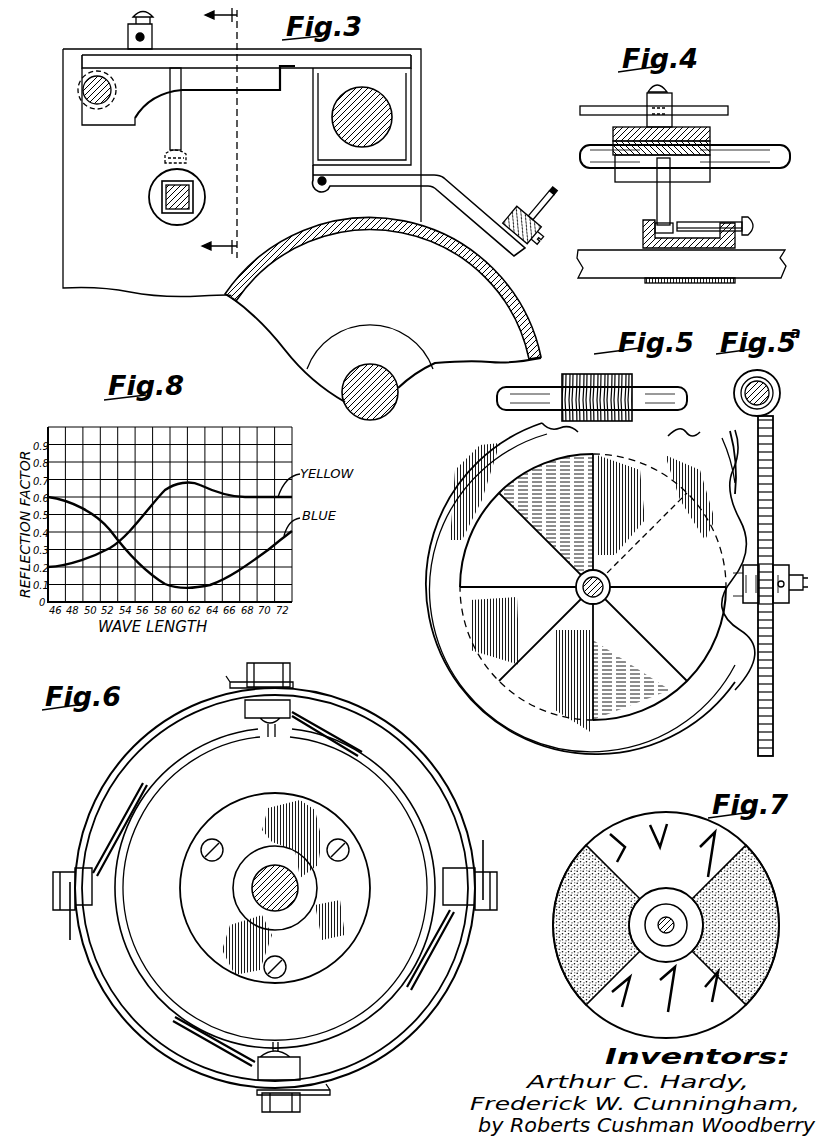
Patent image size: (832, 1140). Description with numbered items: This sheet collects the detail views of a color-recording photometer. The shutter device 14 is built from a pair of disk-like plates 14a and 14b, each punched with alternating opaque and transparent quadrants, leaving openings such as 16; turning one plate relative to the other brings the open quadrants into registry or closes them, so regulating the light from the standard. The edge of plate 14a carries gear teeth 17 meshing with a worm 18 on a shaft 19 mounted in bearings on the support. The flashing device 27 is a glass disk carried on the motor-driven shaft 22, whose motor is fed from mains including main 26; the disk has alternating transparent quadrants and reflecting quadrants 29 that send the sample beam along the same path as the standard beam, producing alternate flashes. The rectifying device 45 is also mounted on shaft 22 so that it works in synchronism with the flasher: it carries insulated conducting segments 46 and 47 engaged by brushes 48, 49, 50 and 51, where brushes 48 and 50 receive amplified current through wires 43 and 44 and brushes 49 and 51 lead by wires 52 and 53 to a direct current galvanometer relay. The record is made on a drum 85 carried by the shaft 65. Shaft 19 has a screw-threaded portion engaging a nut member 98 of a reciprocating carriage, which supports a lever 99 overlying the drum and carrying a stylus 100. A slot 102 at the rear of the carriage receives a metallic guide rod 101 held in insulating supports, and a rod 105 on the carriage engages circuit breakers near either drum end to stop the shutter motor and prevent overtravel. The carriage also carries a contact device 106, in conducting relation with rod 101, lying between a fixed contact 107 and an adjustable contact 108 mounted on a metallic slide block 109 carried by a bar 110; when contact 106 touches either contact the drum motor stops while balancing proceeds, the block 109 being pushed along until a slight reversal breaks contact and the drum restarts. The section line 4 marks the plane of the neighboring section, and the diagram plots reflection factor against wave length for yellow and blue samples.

In FIG. 3, the section line 4— 4 is at (226, 133).
In FIG. 5, the shutter device 14 is at (422, 537).
In FIG. 5, the plate 14a is at (510, 458).
In FIG. 5A, the plate 14a is at (758, 734).
In FIG. 5, the plate 14b is at (525, 495).
In FIG. 5A, the plate 14b is at (775, 480).
In FIG. 5, the opening 16 is at (700, 640).
In FIG. 5, the gear teeth 17 is at (650, 436).
In FIG. 5, the worm 18 is at (628, 386).
In FIG. 5A, the worm 18 is at (766, 378).
In FIG. 3, the shaft 19 is at (390, 110).
In FIG. 5, the shaft 19 is at (680, 390).
In FIG. 5A, the shaft 19 is at (770, 393).
In FIG. 6, the shaft 22 is at (262, 898).
In FIG. 7, the shaft 22 is at (665, 917).
In FIG. 7, the main 26 is at (605, 838).
In FIG. 7, the flashing device 27 is at (785, 870).
In FIG. 7, the reflecting quadrant 29 is at (575, 922).
In FIG. 6, the wire 43 is at (230, 682).
In FIG. 6, the wire 44 is at (320, 1095).
In FIG. 6, the rectifying device 45 is at (330, 680).
In FIG. 6, the conducting segment 46 is at (410, 772).
In FIG. 6, the conducting segment 47 is at (135, 965).
In FIG. 6, the brush 48 is at (340, 740).
In FIG. 6, the brush 49 is at (440, 960).
In FIG. 6, the brush 50 is at (225, 1048).
In FIG. 6, the brush 51 is at (118, 838).
In FIG. 6, the wire 52 is at (487, 840).
In FIG. 6, the wire 53 is at (70, 930).
In FIG. 3, the shaft 65 is at (382, 372).
In FIG. 3, the drum 85 is at (480, 262).
In FIG. 3, the nut member 98 is at (396, 82).
In FIG. 3, the lever 99 is at (452, 182).
In FIG. 3, the stylus 100 is at (492, 260).
In FIG. 3, the guide rod 101 is at (78, 89).
In FIG. 4, the guide rod 101 is at (765, 143).
In FIG. 3, the slot 102 is at (135, 94).
In FIG. 4, the rod 105 is at (700, 106).
In FIG. 4, the contact device 106 is at (670, 198).
In FIG. 4, the fixed contact 107 is at (642, 224).
In FIG. 4, the adjustable contact 108 is at (708, 222).
In FIG. 3, the slide block 109 is at (152, 196).
In FIG. 4, the slide block 109 is at (735, 282).
In FIG. 3, the bar 110 is at (168, 202).
In FIG. 4, the bar 110 is at (770, 250).